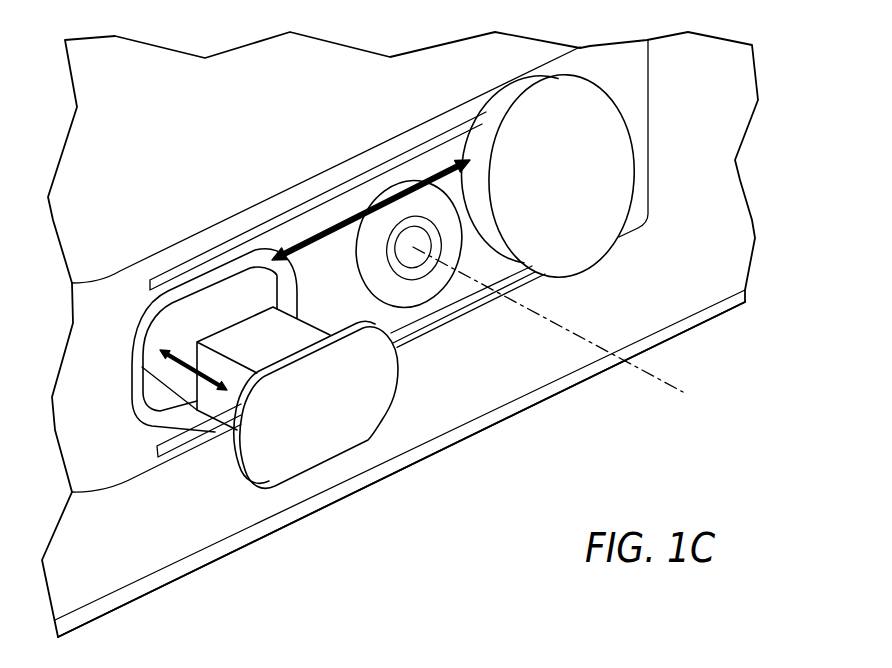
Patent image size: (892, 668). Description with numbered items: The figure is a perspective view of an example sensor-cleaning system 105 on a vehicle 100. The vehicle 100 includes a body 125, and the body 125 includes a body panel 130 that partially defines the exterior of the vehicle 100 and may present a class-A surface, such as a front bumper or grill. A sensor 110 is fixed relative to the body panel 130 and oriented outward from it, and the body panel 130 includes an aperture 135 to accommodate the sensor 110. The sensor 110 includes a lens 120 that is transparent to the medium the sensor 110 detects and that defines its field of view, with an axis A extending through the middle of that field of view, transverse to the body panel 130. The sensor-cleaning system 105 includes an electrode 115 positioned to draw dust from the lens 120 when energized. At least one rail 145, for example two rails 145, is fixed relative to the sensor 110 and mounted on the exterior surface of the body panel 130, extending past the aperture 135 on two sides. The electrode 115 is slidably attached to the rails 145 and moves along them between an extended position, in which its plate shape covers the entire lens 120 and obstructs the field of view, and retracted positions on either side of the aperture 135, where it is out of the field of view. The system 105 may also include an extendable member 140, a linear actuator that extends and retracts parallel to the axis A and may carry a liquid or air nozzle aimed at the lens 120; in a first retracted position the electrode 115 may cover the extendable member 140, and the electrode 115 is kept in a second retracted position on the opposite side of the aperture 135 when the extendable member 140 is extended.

The vehicle 100 is at (733, 352).
The sensor-cleaning system 105 is at (273, 110).
The sensor 110 is at (423, 257).
The electrode 115 is at (633, 182).
The lens 120 is at (413, 252).
The body 125 is at (453, 444).
The body panel 130 is at (633, 90).
The aperture 135 is at (387, 303).
The extendable member 140 is at (245, 343).
The rail 145 is at (368, 173).